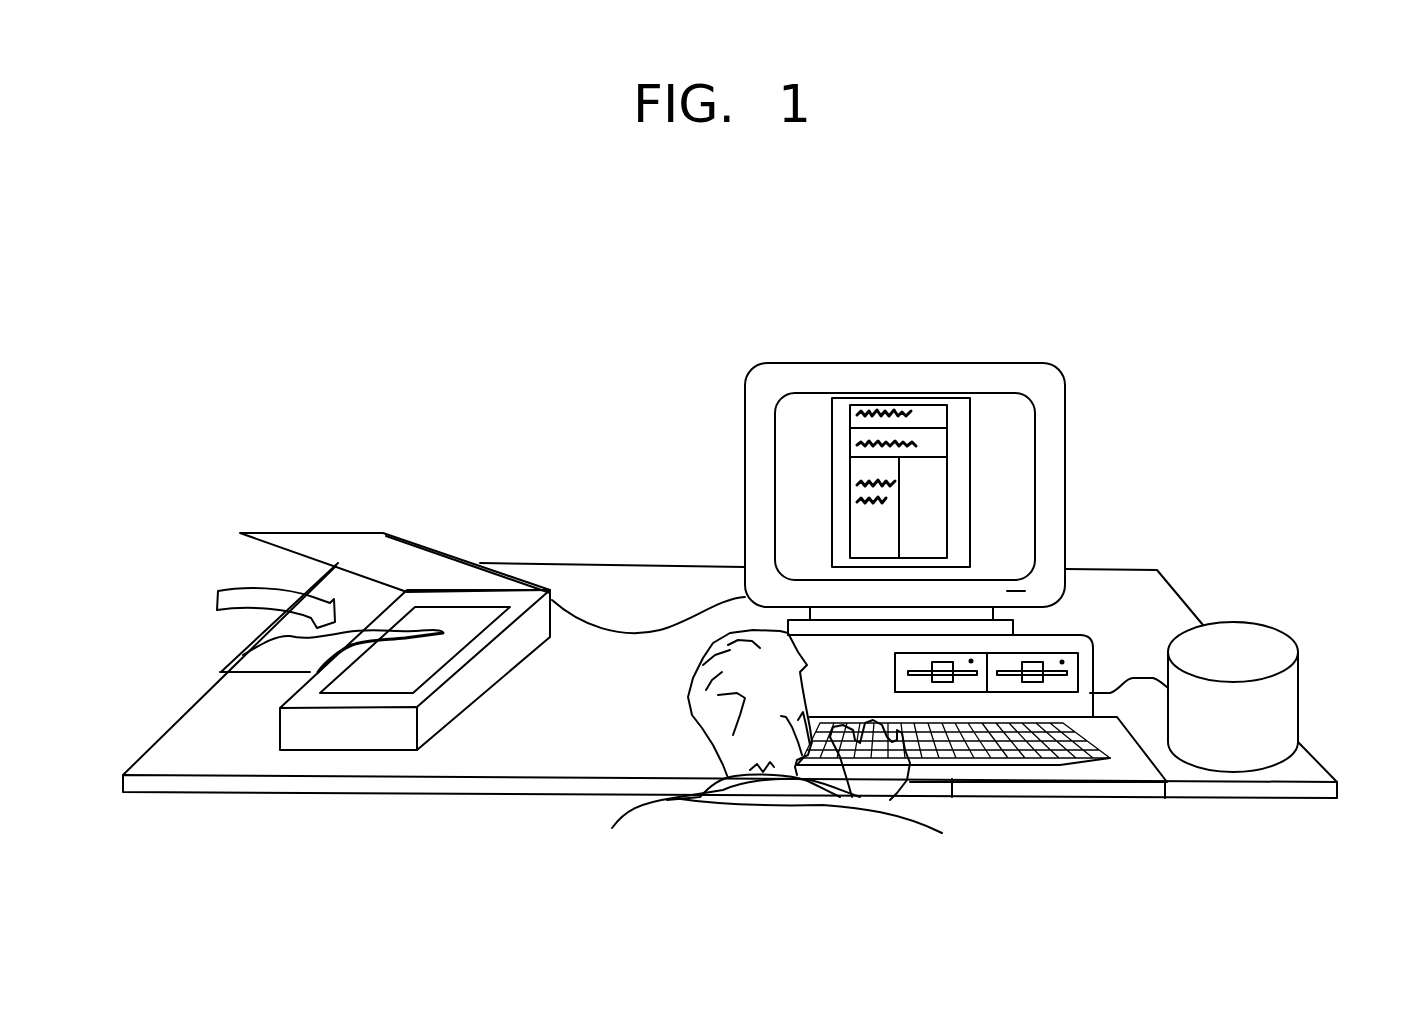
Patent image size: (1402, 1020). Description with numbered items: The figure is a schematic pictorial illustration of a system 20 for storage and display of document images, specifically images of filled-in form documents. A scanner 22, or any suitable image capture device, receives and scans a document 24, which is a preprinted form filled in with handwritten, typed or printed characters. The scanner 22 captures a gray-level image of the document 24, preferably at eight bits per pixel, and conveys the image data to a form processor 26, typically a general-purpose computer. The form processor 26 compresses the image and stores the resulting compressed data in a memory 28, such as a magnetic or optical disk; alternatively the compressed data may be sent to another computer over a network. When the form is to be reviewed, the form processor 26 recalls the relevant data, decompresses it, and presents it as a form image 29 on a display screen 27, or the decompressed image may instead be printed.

The system 20 is at (1262, 270).
The scanner 22 is at (416, 542).
The document 24 is at (246, 660).
The form processor 26 is at (1090, 638).
The display screen 27 is at (1063, 397).
The memory 28 is at (1292, 705).
The form image 29 is at (970, 465).